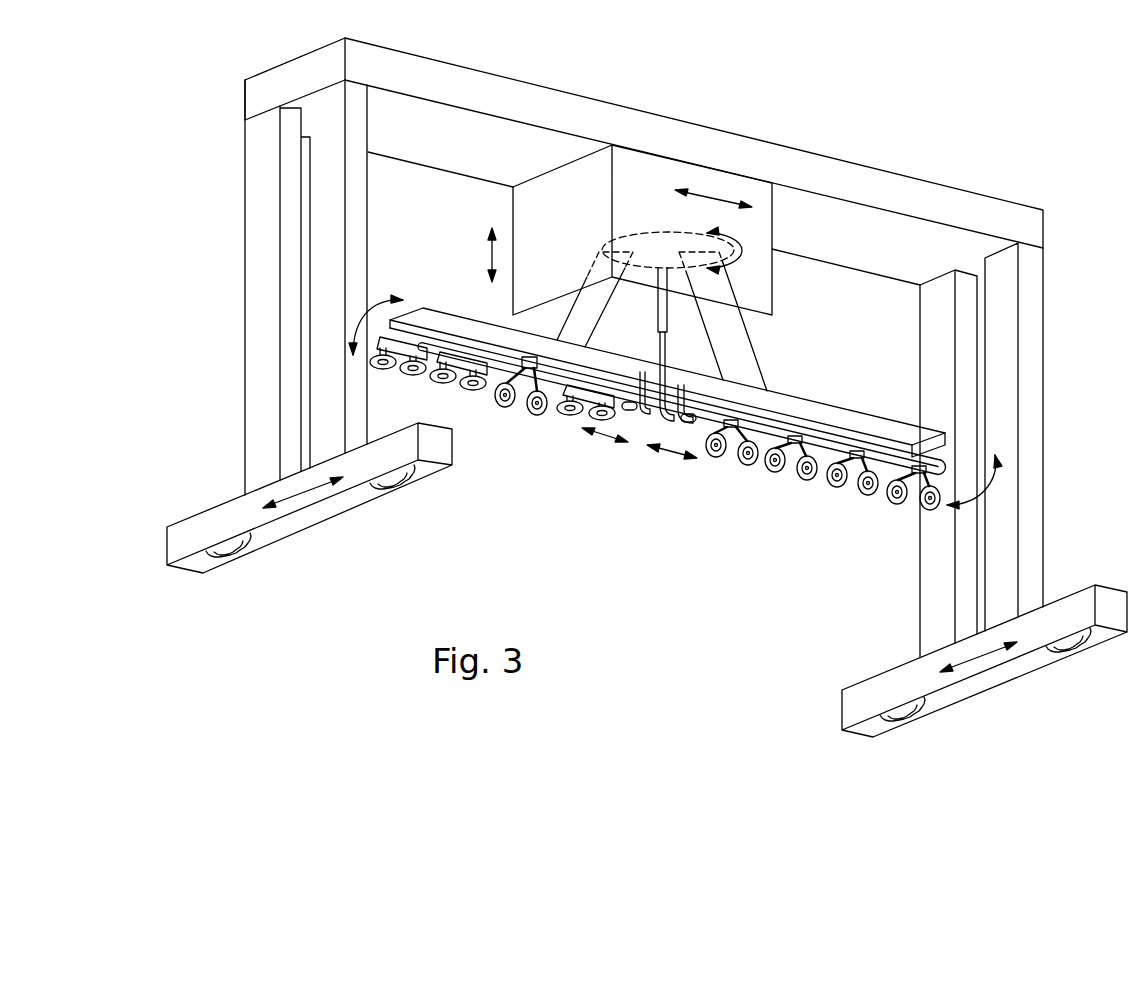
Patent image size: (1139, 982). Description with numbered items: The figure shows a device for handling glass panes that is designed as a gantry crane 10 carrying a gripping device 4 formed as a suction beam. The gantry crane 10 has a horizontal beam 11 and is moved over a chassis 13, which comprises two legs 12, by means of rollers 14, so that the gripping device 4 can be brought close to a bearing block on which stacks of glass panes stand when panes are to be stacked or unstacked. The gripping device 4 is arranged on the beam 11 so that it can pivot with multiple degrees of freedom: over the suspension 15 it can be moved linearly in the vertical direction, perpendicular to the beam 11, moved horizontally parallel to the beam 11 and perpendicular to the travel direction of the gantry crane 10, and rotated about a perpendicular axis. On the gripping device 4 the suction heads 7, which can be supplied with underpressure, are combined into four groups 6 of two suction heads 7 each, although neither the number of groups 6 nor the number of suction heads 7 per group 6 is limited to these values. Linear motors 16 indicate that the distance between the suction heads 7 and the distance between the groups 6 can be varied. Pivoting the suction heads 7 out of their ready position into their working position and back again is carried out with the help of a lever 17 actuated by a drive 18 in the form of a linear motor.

The gripping device 4 is at (590, 463).
The groups of suction heads 6 is at (513, 418).
The suction heads 7 is at (502, 405).
The gantry crane 10 is at (639, 346).
The horizontal beam 11 is at (565, 118).
The legs 12 is at (262, 268).
The chassis 13 is at (182, 503).
The rollers 14 is at (222, 555).
The suspension 15 is at (567, 208).
The linear motors 16 is at (625, 408).
The lever 17 is at (700, 391).
The drive 18 is at (662, 305).